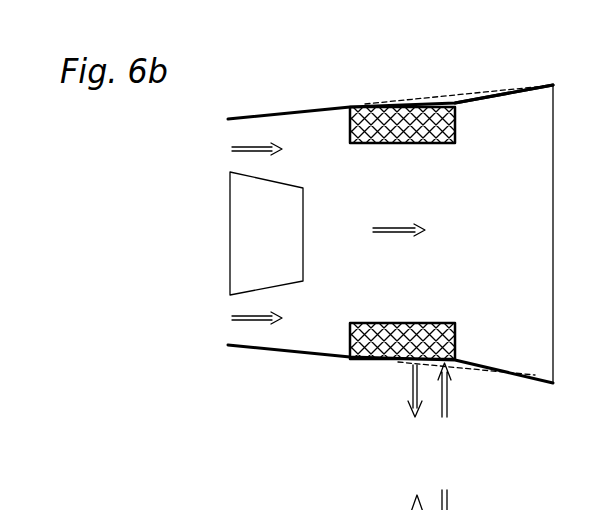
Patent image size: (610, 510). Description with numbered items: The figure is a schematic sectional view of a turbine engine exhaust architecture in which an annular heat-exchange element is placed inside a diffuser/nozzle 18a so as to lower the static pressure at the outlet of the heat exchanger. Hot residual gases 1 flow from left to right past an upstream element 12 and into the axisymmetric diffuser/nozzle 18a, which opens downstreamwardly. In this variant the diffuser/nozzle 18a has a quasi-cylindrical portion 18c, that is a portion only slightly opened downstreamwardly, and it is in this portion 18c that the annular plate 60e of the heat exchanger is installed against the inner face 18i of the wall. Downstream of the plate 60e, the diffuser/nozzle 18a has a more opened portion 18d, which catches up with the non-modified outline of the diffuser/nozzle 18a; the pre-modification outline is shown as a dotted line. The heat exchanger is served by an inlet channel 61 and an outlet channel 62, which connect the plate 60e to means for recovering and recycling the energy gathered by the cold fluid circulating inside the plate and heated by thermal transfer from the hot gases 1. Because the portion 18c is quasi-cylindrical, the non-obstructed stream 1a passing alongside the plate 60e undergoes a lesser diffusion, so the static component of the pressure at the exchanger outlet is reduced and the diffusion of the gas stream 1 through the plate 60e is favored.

The hot residual gases 1 is at (238, 147).
The non-obstructed stream 1a is at (380, 226).
The heat exchanger 12 is at (272, 245).
The diffuser/nozzle 18a is at (463, 92).
The quasi-cylindrical portion 18c is at (453, 94).
The more opened portion 18d is at (504, 118).
The inner face 18i is at (281, 505).
The annular plate 60e is at (376, 340).
The inlet channel 61 is at (456, 387).
The outlet channel 62 is at (413, 387).